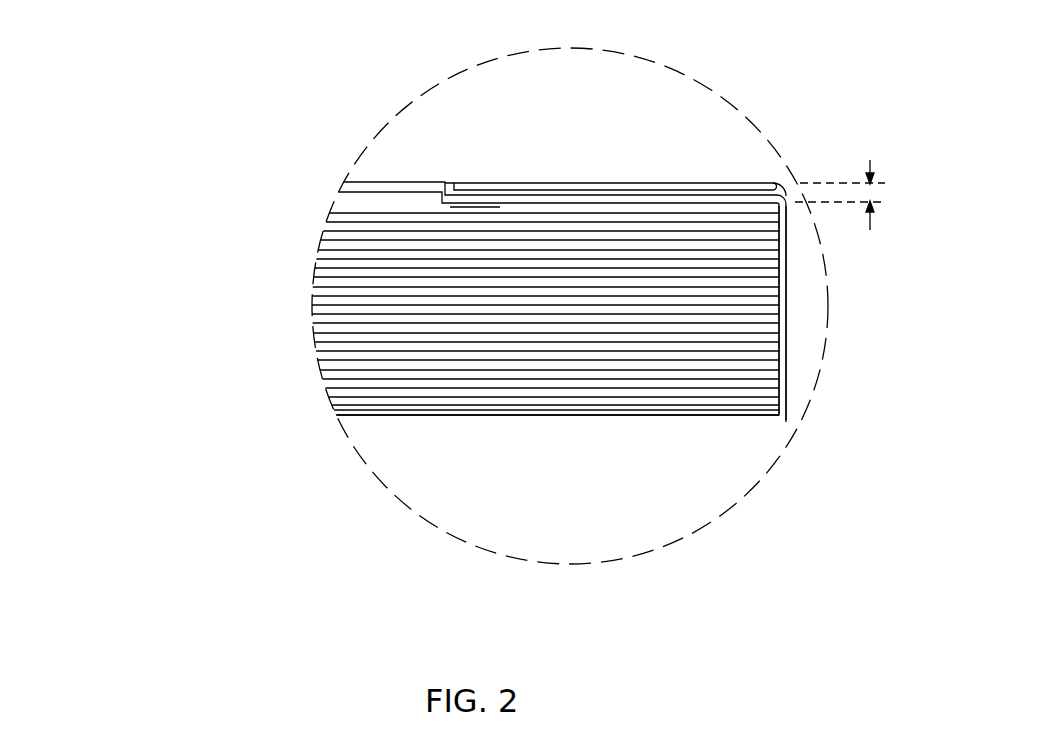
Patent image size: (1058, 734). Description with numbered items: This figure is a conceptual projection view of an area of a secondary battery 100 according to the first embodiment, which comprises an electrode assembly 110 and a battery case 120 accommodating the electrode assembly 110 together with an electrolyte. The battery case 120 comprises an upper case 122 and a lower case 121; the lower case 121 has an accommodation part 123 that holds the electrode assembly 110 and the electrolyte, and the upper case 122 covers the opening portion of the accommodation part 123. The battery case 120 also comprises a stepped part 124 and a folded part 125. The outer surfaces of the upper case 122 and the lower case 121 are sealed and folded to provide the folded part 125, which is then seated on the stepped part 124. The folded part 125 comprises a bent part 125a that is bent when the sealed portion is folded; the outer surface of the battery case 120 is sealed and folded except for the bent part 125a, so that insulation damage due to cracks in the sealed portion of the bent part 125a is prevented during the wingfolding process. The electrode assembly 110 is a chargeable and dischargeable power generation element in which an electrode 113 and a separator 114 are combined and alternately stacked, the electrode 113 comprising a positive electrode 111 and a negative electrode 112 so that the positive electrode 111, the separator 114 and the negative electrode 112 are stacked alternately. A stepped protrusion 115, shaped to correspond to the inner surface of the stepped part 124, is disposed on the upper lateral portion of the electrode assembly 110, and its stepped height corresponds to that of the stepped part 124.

The secondary battery 100 is at (823, 50).
The electrode assembly 110 is at (155, 200).
The positive electrode 111 is at (340, 202).
The negative electrode 112 is at (335, 214).
The electrode 113 is at (213, 238).
The separator 114 is at (340, 191).
The stepped protrusion 115 is at (472, 215).
The battery case 120 is at (97, 172).
The lower case 121 is at (357, 417).
The upper case 122 is at (362, 186).
The accommodation part 123 is at (768, 282).
The stepped part 124 is at (708, 190).
The folded part 125 is at (612, 178).
The bent part 125a is at (790, 195).